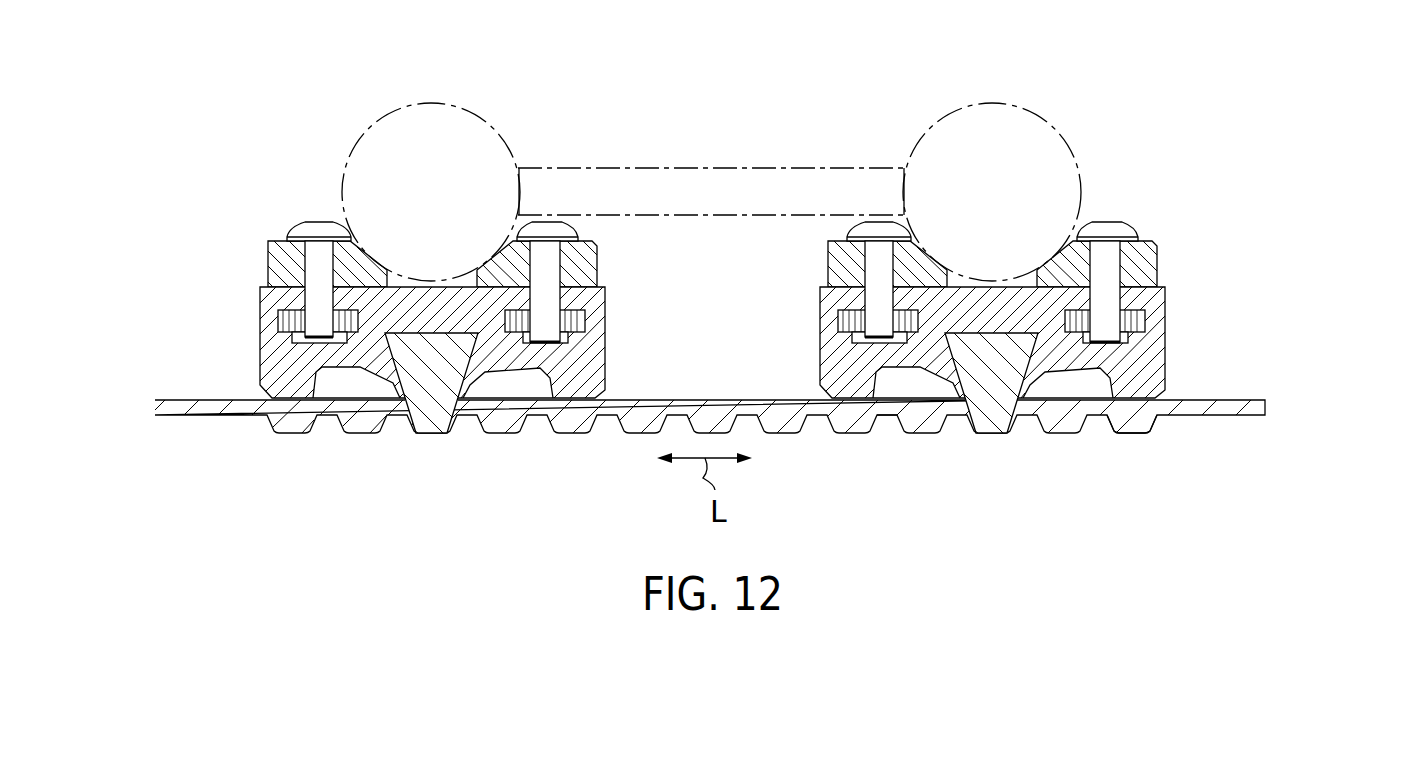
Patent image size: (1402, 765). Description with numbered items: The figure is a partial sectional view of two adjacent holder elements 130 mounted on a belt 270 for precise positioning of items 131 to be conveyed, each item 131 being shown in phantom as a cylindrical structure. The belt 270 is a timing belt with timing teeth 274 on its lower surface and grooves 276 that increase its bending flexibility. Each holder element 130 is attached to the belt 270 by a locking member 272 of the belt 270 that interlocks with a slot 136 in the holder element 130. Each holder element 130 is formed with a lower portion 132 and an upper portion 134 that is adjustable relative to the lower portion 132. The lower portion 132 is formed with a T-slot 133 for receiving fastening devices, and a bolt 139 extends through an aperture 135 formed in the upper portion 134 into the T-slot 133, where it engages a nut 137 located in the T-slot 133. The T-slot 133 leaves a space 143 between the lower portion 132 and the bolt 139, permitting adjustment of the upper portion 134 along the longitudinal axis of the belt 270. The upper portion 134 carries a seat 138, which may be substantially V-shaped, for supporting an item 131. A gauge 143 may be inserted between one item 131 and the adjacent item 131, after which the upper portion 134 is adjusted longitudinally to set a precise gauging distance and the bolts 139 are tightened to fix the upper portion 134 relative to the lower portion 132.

The holder element 130 is at (733, 301).
The item 131 is at (387, 118).
The lower portion 132 is at (1165, 330).
The T-slot 133 is at (1165, 365).
The upper portion 134 is at (1157, 247).
The aperture 135 is at (1108, 250).
The slot 136 is at (1000, 350).
The nut 137 is at (273, 320).
The seat 138 is at (372, 256).
The bolt 139 is at (305, 222).
The space 143 is at (733, 167).
The belt 270 is at (203, 442).
The locking member 272 is at (431, 372).
The timing teeth 274 is at (1132, 434).
The grooves 276 is at (886, 415).